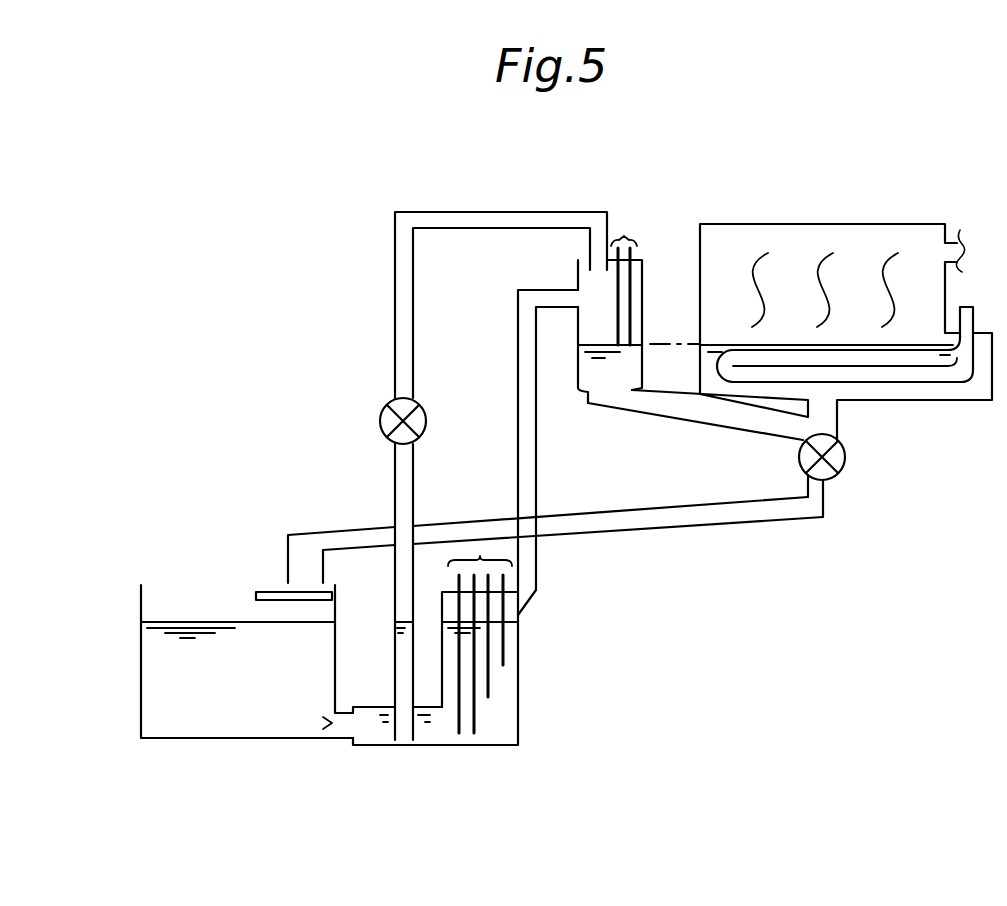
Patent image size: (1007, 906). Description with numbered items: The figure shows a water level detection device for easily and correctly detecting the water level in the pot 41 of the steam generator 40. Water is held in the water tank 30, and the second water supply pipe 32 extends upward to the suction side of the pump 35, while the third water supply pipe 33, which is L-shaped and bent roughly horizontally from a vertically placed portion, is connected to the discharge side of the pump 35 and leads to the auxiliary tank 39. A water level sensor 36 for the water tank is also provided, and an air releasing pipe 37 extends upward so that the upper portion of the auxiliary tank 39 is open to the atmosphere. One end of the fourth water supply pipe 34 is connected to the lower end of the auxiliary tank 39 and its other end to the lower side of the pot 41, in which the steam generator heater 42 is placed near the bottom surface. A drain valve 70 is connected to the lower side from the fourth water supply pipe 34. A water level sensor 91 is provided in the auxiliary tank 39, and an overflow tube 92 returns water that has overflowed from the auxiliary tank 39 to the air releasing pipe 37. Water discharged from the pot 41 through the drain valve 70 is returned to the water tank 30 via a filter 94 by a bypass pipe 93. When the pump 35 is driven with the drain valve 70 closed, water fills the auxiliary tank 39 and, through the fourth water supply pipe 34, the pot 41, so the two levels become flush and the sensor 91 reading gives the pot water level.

The water tank 30 is at (141, 688).
The second water supply pipe 32 is at (395, 493).
The third water supply pipe 33 is at (395, 268).
The fourth water supply pipe 34 is at (694, 424).
The pump 35 is at (380, 420).
The water level sensor 36 is at (480, 556).
The air releasing pipe 37 is at (519, 703).
The auxiliary tank 39 is at (645, 306).
The steam generator 40 is at (823, 298).
The pot 41 is at (700, 253).
The steam generator heater 42 is at (947, 383).
The drain valve 70 is at (846, 463).
The water level sensor 91 is at (624, 236).
The overflow tube 92 is at (538, 452).
The bypass pipe 93 is at (633, 531).
The filter 94 is at (262, 590).